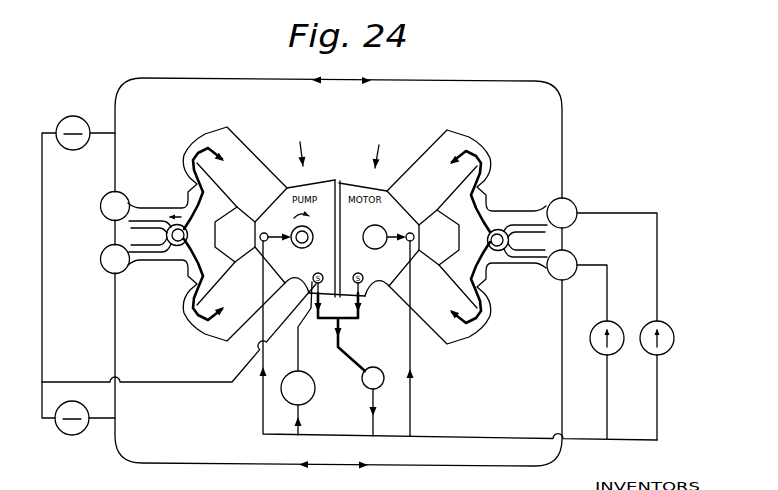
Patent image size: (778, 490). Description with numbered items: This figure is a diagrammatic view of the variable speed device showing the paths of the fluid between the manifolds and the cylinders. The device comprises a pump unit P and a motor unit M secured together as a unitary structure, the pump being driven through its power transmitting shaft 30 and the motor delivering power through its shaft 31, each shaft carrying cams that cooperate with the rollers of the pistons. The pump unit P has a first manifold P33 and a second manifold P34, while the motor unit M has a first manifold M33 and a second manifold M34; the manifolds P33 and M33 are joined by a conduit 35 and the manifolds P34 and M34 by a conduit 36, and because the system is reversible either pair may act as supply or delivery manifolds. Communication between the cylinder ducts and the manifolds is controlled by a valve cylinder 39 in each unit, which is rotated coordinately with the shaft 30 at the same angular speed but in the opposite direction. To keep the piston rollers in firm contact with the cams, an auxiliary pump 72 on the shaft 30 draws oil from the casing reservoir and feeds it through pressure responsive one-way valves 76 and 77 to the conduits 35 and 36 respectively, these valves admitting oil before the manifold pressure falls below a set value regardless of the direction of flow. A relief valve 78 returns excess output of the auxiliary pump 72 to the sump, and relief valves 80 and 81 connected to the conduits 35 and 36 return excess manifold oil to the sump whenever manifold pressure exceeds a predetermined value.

The conduit 35 is at (481, 80).
The conduit 36 is at (239, 470).
The valve cylinder 39 is at (175, 250).
The power transmitting shaft 30 is at (303, 248).
The power transmitting shaft 31 is at (373, 250).
The auxiliary pump 72 is at (379, 367).
The pressure responsive one-way valve 76 is at (669, 326).
The pressure responsive one-way valve 77 is at (613, 321).
The relief valve 78 is at (315, 389).
The relief valve 80 is at (80, 117).
The relief valve 81 is at (80, 437).
The first manifold P33 is at (100, 199).
The second manifold P34 is at (100, 261).
The first manifold M33 is at (582, 203).
The second manifold M34 is at (582, 256).
The pump unit P is at (298, 145).
The motor unit M is at (376, 147).